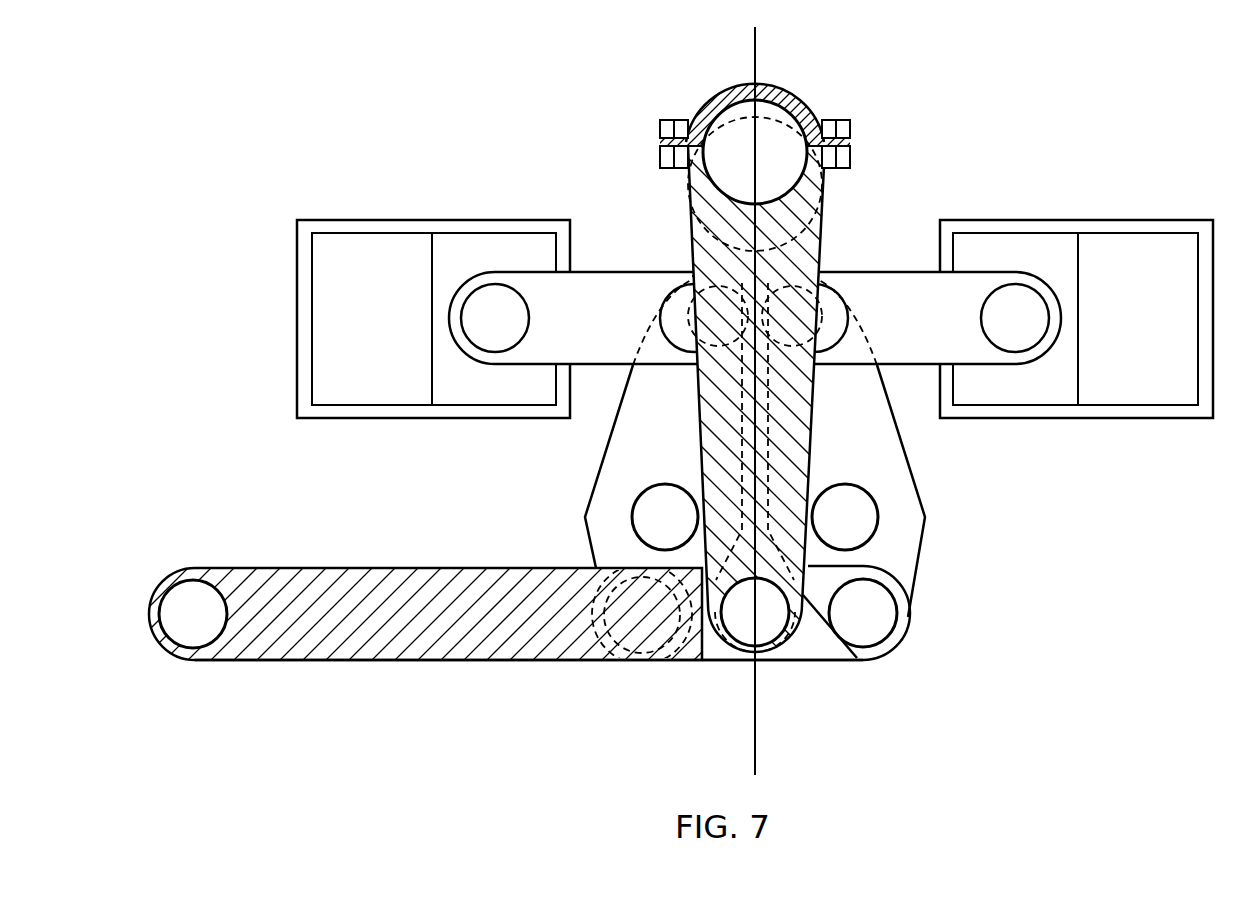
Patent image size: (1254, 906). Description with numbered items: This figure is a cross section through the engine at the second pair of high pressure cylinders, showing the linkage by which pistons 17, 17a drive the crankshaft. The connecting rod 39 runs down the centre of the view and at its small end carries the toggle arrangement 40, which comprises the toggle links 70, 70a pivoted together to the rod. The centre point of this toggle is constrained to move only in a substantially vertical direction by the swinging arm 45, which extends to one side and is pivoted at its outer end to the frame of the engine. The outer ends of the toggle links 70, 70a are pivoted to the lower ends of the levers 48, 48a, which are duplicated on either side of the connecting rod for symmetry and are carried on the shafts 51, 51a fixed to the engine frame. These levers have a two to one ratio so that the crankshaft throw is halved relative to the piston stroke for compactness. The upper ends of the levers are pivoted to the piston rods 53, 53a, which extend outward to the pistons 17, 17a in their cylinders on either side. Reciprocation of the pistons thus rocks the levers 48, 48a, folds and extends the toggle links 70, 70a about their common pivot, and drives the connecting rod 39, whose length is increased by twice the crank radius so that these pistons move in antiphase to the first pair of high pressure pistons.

The piston 17 is at (475, 253).
The piston 17a is at (1025, 245).
The connecting rod 39 is at (822, 232).
The toggle arrangement 40 is at (812, 677).
The swinging arm 45 is at (440, 651).
The lever 48 is at (607, 430).
The lever 48a is at (905, 473).
The shaft 51 is at (633, 500).
The shaft 51a is at (865, 510).
The piston rod 53 is at (592, 278).
The piston rod 53a is at (918, 274).
The toggle link 70 is at (686, 660).
The toggle link 70a is at (902, 640).